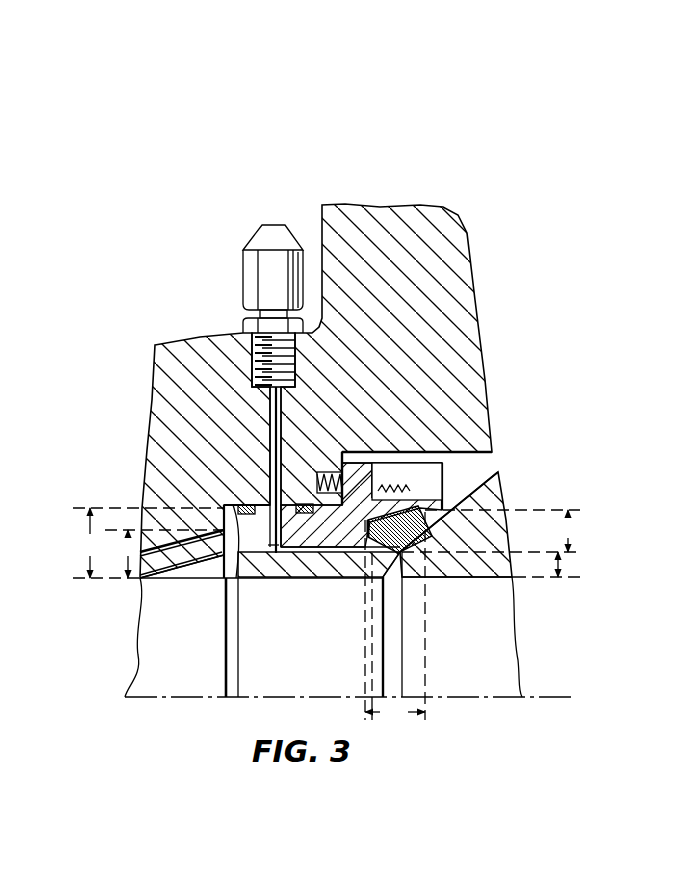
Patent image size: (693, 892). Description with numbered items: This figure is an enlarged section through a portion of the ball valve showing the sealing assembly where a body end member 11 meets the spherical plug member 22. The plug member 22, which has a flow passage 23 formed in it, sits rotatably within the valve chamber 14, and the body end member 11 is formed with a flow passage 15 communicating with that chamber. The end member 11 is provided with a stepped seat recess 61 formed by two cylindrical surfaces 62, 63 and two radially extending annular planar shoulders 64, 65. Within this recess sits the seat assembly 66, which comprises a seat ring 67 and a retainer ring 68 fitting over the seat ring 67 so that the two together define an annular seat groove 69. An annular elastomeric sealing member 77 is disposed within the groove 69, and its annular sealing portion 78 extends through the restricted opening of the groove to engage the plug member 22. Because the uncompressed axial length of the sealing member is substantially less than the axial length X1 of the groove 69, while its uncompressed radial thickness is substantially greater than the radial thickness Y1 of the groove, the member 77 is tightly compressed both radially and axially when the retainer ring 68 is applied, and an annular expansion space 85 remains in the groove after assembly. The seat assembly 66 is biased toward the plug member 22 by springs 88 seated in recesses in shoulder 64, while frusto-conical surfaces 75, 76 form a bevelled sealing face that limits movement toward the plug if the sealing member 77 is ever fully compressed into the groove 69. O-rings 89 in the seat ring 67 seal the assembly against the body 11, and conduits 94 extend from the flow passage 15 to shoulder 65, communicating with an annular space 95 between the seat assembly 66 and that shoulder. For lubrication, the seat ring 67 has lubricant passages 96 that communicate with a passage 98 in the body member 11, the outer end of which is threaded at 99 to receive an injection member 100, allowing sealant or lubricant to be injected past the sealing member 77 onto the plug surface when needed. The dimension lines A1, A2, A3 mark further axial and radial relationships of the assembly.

The body end member 11 is at (443, 233).
The valve chamber 14 is at (478, 474).
The flow passage 15 is at (190, 660).
The spherical plug member 22 is at (486, 573).
The flow passage 23 is at (480, 658).
The stepped seat recess 61 is at (487, 453).
The cylindrical surface 62 is at (385, 453).
The cylindrical surface 63 is at (258, 498).
The annular planar shoulder 64 is at (367, 453).
The annular planar shoulder 65 is at (223, 502).
The seat assembly 66 is at (332, 576).
The seat ring 67 is at (306, 574).
The retainer ring 68 is at (426, 485).
The annular seat groove 69 is at (388, 488).
The frusto-conical surface 75 is at (393, 622).
The frusto-conical surface 76 is at (427, 511).
The annular elastomeric sealing member 77 is at (416, 560).
The annular sealing portion 78 is at (397, 550).
The annular expansion space 85 is at (364, 536).
The spring 88 is at (322, 494).
The o-ring 89 is at (236, 520).
The conduit 94 is at (182, 554).
The annular space 95 is at (226, 584).
The lubricant passage 96 is at (281, 579).
The passage 98 is at (272, 402).
The threaded outer extremity 99 is at (250, 372).
The injection member 100 is at (265, 273).
The dimension A1 is at (548, 563).
The dimension A2 is at (164, 554).
The dimension A3 is at (148, 543).
The radial thickness of the groove Y1 is at (492, 531).
The axial length of the groove X1 is at (395, 713).